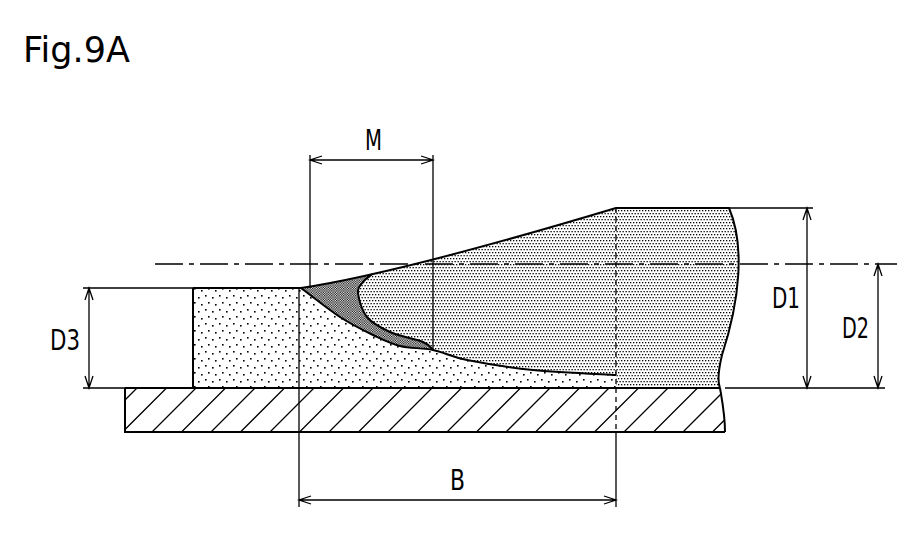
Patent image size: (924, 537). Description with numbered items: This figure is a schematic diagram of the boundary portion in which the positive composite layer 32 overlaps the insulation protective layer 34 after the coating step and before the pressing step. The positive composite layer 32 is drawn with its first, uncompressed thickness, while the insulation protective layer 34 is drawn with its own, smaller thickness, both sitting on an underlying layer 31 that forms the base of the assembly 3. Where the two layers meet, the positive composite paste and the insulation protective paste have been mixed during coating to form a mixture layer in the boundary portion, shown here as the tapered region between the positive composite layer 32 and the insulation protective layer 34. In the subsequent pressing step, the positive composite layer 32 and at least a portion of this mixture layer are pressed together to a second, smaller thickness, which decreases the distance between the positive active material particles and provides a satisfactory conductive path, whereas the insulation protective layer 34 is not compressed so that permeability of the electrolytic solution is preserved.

The bonding structure 3 is at (732, 110).
The substrate 31 is at (203, 426).
The positive composite layer 32 is at (663, 213).
The insulation protective layer 34 is at (238, 297).